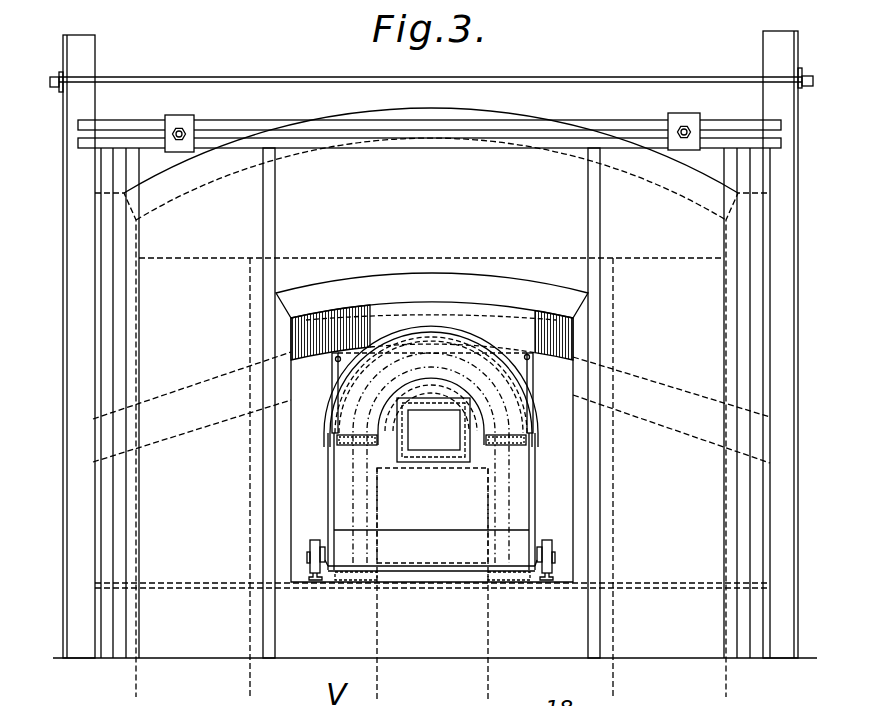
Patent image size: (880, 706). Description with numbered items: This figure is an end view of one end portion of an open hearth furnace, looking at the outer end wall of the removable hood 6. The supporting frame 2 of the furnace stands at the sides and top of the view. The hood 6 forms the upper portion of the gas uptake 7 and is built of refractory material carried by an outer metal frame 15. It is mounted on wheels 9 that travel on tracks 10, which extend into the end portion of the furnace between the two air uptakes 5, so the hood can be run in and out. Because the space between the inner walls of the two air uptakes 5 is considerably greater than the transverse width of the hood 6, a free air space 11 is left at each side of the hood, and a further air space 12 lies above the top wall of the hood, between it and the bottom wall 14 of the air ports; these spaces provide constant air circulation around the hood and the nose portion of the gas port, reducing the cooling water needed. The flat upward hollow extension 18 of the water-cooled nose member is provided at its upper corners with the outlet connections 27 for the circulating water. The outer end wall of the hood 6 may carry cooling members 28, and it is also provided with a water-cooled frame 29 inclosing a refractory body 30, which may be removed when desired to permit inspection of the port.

The supporting frame 2 is at (213, 142).
The air uptakes 5 is at (432, 477).
The removable hood 6 is at (431, 466).
The gas uptake 7 is at (432, 584).
The wheels 9 is at (316, 543).
The tracks 10 is at (314, 581).
The air space 11 is at (432, 450).
The air space 12 is at (480, 347).
The bottom wall 14 is at (432, 316).
The outer metal frame 15 is at (330, 454).
The upward hollow extension 18 is at (529, 373).
The outlet connections 27 is at (335, 362).
The cooling members 28 is at (378, 436).
The water-cooled frame 29 is at (452, 399).
The refractory body 30 is at (434, 430).